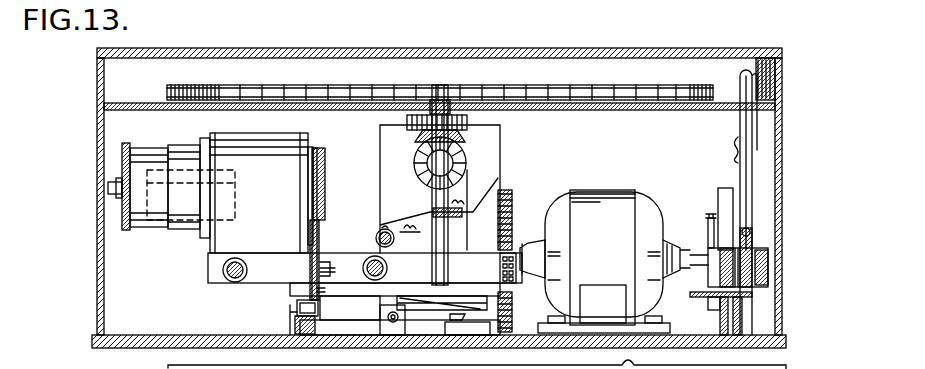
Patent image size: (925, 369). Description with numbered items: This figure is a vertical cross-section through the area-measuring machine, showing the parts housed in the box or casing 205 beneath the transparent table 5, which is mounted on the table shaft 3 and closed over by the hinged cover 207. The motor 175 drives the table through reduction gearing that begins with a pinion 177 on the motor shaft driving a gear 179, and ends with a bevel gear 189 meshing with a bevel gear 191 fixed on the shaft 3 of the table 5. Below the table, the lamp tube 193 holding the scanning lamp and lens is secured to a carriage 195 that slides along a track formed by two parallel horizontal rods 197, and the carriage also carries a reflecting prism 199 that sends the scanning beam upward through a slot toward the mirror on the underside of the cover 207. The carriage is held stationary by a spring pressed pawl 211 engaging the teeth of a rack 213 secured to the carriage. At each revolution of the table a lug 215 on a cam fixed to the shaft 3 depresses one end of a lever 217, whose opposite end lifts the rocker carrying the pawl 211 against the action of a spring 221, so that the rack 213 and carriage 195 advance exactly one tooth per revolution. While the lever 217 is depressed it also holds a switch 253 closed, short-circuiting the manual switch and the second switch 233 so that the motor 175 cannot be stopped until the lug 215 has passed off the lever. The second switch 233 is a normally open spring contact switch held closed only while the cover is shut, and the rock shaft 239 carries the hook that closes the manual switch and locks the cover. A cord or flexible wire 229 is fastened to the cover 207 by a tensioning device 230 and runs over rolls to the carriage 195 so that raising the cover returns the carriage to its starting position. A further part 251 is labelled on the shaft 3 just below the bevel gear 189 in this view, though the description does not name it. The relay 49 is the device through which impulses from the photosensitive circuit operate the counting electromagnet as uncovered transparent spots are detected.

The table shaft 3 is at (432, 160).
The table 5 is at (481, 88).
The relay 49 is at (599, 290).
The motor 175 is at (597, 200).
The pinion 177 is at (514, 240).
The gear 179 is at (513, 196).
The bevel gear 189 is at (466, 152).
The bevel gear 191 is at (455, 140).
The lamp tube 193 is at (181, 148).
The carriage 195 is at (305, 245).
The horizontal rods 197 is at (233, 282).
The reflecting prism 199 is at (487, 168).
The casing 205 is at (97, 237).
The hinged cover 207 is at (618, 47).
The pawl 211 is at (301, 303).
The rack 213 is at (302, 280).
The cam lug 215 is at (422, 298).
The lever 217 is at (350, 318).
The spring 221 is at (298, 318).
The cord or flexible wire 229 is at (735, 246).
The tensioning device 230 is at (744, 136).
The second switch 233 is at (718, 190).
The rock shaft 239 is at (384, 228).
The collar 251 is at (432, 212).
The switch 253 is at (463, 322).